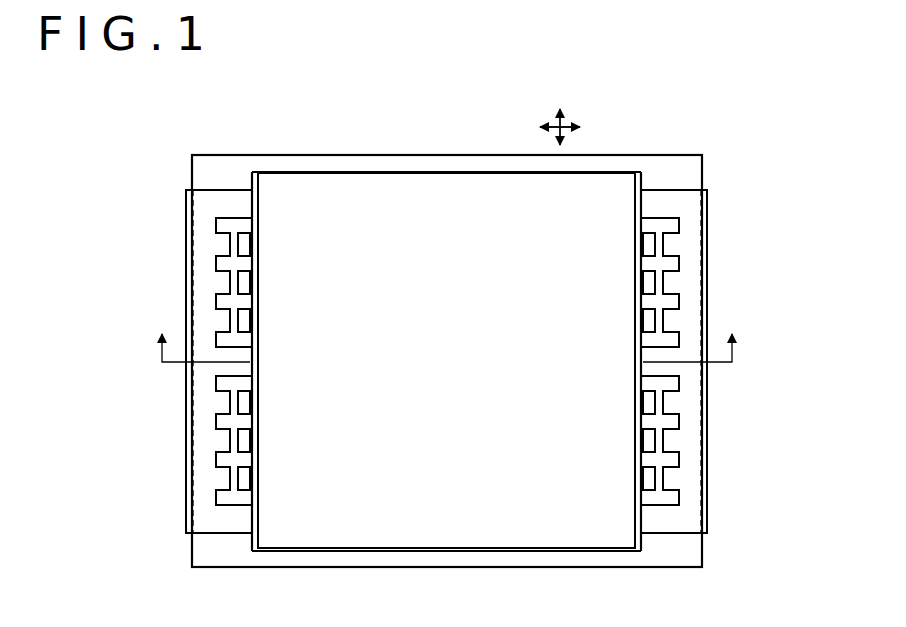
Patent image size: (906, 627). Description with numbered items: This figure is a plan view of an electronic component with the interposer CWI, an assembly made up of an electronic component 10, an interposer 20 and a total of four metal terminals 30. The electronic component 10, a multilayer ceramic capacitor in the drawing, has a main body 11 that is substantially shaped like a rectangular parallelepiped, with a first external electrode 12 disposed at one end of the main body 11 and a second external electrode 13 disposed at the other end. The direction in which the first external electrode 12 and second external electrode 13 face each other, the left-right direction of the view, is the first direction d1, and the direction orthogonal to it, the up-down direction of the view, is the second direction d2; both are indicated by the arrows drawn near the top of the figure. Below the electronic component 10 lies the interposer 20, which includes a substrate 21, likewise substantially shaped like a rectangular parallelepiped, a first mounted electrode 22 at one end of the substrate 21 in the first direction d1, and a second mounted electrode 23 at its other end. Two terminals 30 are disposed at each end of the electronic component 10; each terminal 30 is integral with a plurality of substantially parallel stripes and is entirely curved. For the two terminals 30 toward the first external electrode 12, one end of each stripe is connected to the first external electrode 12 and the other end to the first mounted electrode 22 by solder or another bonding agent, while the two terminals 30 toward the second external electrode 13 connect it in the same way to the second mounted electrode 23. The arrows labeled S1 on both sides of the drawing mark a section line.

The electronic component 10 is at (445, 171).
The main body 11 is at (348, 180).
The first external electrode 12 is at (252, 171).
The second external electrode 13 is at (643, 169).
The interposer 20 is at (192, 176).
The substrate 21 is at (201, 550).
The first mounted electrode 22 is at (202, 403).
The second mounted electrode 23 is at (692, 402).
The metal terminal 30 is at (222, 263).
The first direction S1 is at (447, 354).
The first direction d1 is at (574, 127).
The second direction d2 is at (559, 113).
The electronic component with the interposer CWI is at (201, 152).